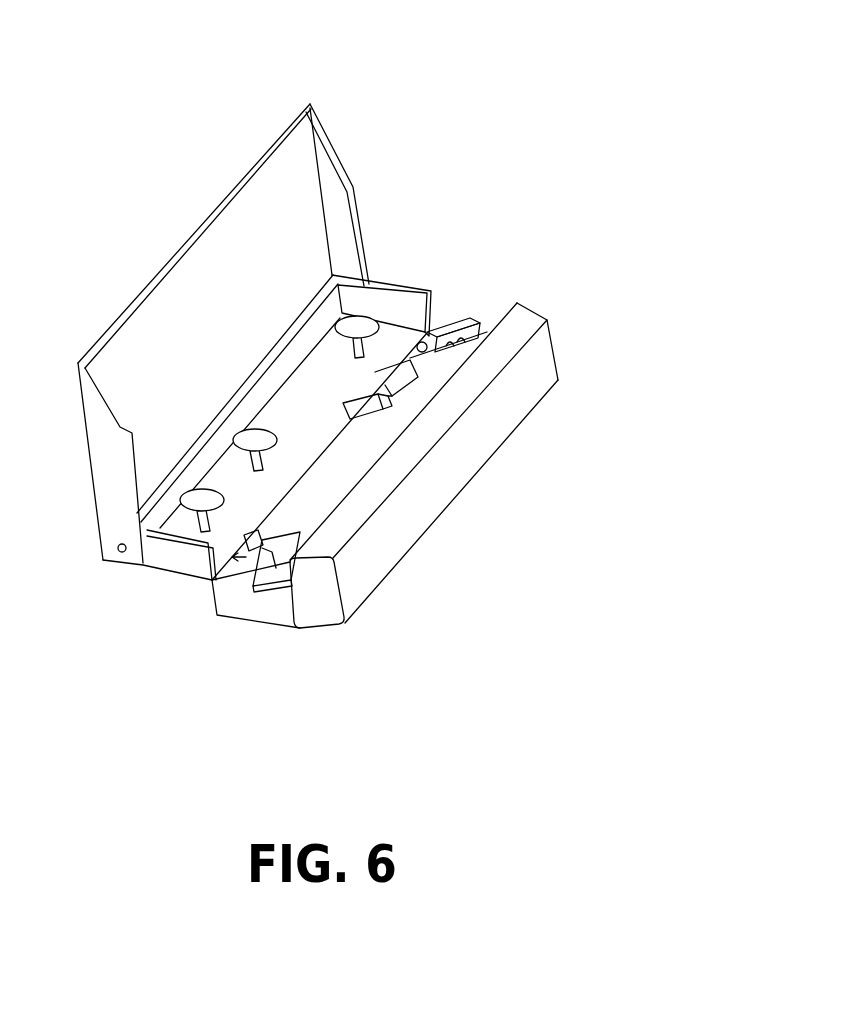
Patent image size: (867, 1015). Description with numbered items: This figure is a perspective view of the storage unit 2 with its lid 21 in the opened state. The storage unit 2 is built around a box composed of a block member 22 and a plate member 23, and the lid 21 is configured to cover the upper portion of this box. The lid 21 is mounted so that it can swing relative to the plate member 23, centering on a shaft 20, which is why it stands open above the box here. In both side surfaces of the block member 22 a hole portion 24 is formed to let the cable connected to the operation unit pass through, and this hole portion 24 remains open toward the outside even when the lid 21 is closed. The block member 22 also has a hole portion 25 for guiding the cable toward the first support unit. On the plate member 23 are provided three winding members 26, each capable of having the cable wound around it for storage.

The storage unit 2 is at (433, 88).
The shaft 20 is at (118, 553).
The lid 21 is at (252, 207).
The block member 22 is at (417, 510).
The plate member 23 is at (190, 567).
The hole portion 24 is at (490, 322).
The hole portion 25 is at (363, 383).
The winding member 26 is at (352, 330).